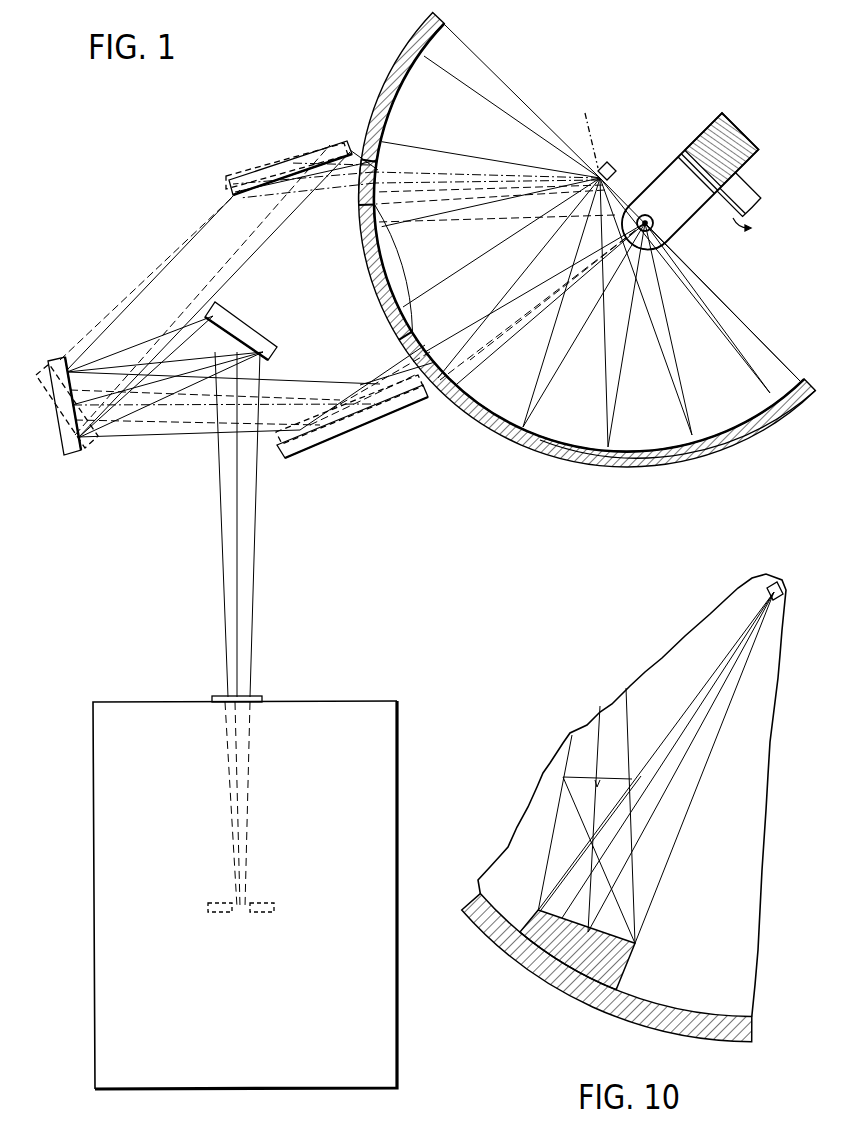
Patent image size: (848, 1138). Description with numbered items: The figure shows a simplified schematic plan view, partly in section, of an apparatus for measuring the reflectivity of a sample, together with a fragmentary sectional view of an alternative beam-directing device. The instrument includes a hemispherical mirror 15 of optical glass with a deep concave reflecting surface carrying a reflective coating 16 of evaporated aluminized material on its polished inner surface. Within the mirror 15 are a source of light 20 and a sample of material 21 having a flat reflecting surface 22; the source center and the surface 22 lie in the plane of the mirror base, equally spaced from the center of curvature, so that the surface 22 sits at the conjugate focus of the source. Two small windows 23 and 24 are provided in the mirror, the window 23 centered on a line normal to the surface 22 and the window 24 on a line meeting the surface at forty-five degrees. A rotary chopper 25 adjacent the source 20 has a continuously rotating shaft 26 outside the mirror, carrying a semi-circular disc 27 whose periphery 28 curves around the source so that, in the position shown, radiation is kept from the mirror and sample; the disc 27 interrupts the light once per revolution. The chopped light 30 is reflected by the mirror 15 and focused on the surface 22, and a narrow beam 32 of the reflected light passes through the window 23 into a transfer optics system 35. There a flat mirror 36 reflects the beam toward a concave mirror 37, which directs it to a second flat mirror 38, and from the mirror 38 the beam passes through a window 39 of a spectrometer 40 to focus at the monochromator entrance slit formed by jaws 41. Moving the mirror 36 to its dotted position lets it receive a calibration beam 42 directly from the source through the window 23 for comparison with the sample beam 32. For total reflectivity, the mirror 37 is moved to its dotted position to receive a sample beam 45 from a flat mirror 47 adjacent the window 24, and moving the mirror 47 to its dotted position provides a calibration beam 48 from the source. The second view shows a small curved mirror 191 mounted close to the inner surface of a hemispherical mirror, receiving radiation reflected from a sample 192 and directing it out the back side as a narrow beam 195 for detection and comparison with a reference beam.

In FIG. 1, the hemispherical mirror 15 is at (727, 452).
In FIG. 1, the reflective coating 16 is at (760, 415).
In FIG. 1, the source of light 20 is at (634, 221).
In FIG. 1, the sample of material 21 is at (606, 163).
In FIG. 1, the flat reflecting surface 22 is at (584, 130).
In FIG. 1, the window 23 is at (402, 352).
In FIG. 1, the window 24 is at (364, 206).
In FIG. 1, the rotary chopper 25 is at (736, 127).
In FIG. 1, the rotating shaft 26 is at (760, 192).
In FIG. 1, the semi-circular disc 27 is at (673, 164).
In FIG. 1, the periphery of the disc 28 is at (672, 237).
In FIG. 1, the light from the source 30 is at (670, 366).
In FIG. 1, the narrow beam 32 is at (472, 305).
In FIG. 1, the transfer optics system 35 is at (163, 271).
In FIG. 1, the flat mirror 36 is at (300, 452).
In FIG. 1, the concave mirror 37 is at (62, 452).
In FIG. 1, the second flat mirror 38 is at (246, 328).
In FIG. 1, the window of the spectrometer 39 is at (262, 696).
In FIG. 1, the spectrometer 40 is at (397, 756).
In FIG. 1, the entrance slit jaws 41 is at (263, 904).
In FIG. 1, the calibration beam 42 is at (526, 330).
In FIG. 1, the sample beam 45 is at (473, 180).
In FIG. 1, the flat mirror 47 is at (350, 146).
In FIG. 1, the calibration beam 48 is at (513, 200).
In FIG. 10, the small curved mirror 191 is at (627, 968).
In FIG. 10, the sample 192 is at (730, 580).
In FIG. 10, the narrow beam 195 is at (594, 786).